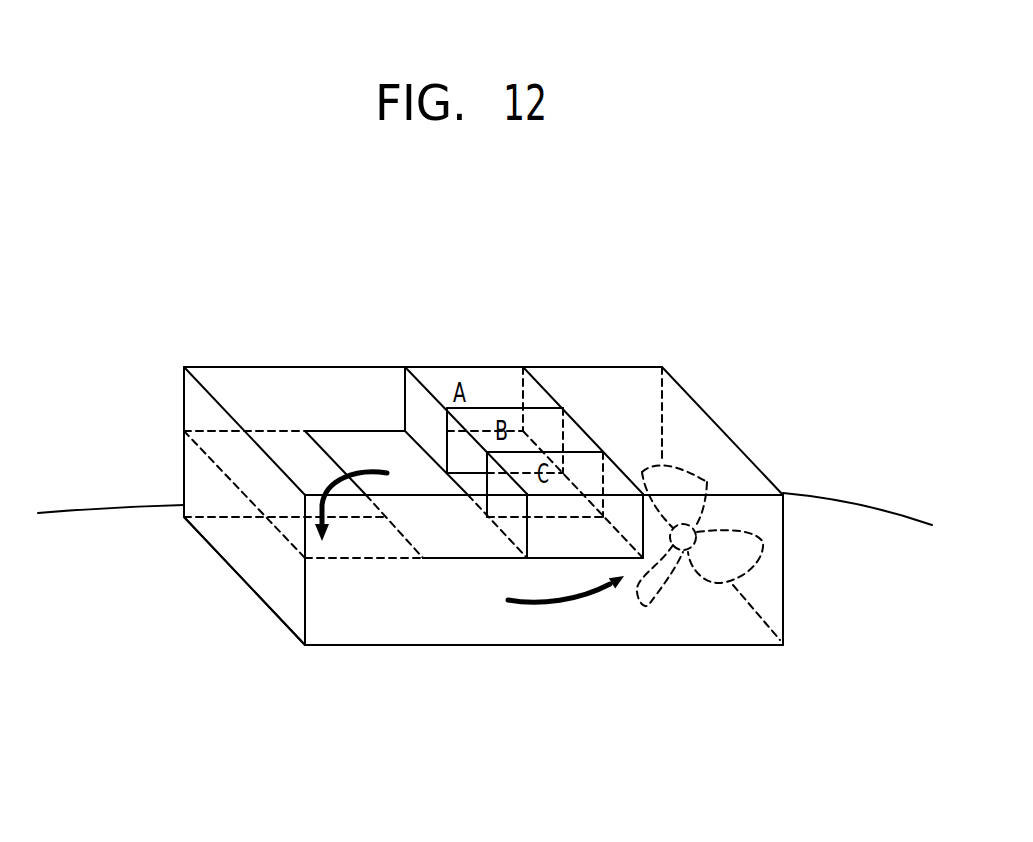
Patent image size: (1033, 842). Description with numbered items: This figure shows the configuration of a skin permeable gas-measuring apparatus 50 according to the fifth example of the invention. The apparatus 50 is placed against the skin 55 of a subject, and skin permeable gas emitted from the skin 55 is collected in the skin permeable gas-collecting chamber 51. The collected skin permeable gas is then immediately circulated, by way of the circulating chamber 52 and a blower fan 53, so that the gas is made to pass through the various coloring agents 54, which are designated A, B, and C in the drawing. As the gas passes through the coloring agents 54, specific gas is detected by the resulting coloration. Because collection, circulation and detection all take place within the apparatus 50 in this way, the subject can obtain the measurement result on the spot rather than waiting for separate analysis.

The skin permeable gas-measuring apparatus 50 is at (173, 356).
The skin permeable gas-collecting chamber 51 is at (193, 474).
The circulating chamber 52 is at (193, 409).
The blower fan 53 is at (766, 530).
The coloring agents 54 is at (622, 473).
The skin of a subject 55 is at (842, 500).